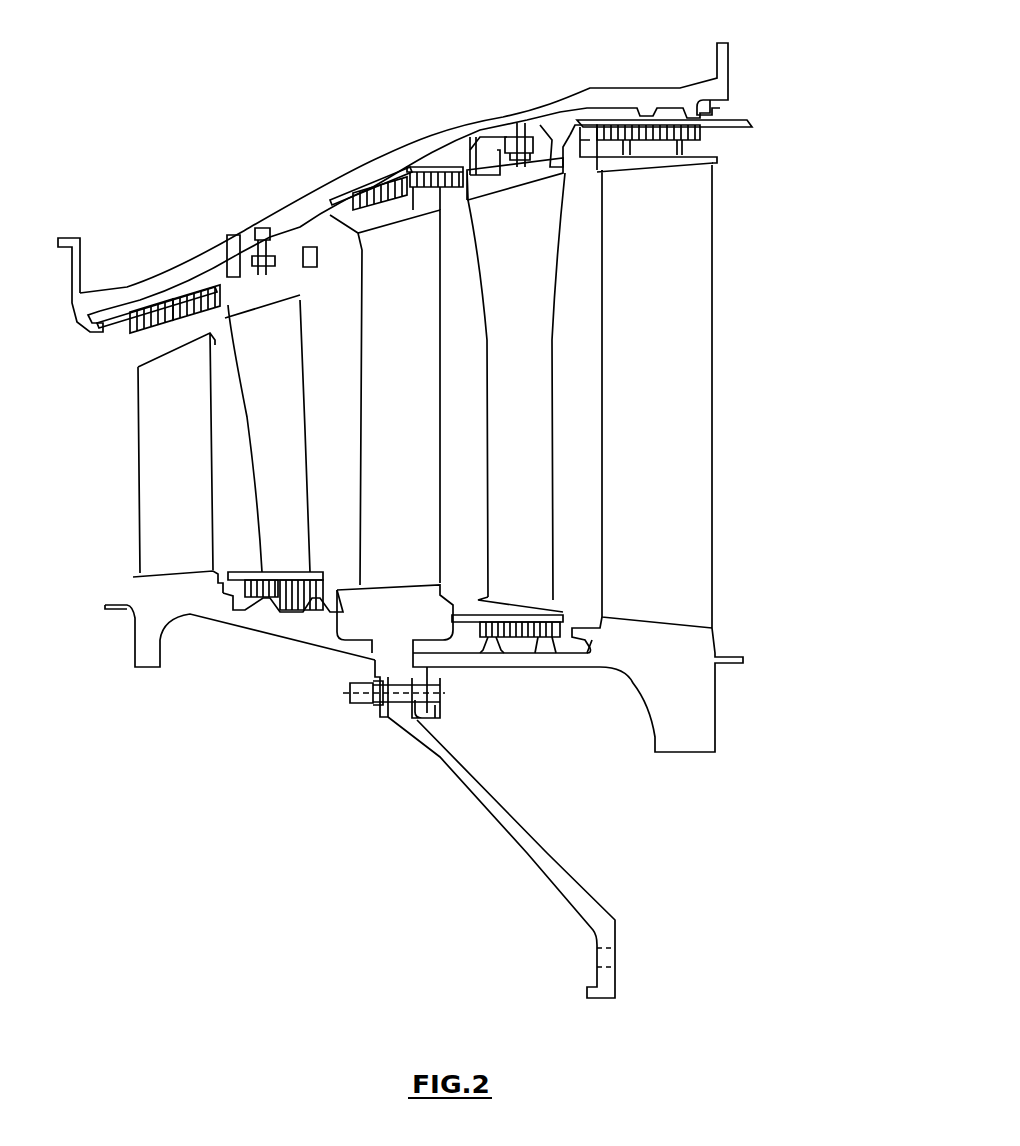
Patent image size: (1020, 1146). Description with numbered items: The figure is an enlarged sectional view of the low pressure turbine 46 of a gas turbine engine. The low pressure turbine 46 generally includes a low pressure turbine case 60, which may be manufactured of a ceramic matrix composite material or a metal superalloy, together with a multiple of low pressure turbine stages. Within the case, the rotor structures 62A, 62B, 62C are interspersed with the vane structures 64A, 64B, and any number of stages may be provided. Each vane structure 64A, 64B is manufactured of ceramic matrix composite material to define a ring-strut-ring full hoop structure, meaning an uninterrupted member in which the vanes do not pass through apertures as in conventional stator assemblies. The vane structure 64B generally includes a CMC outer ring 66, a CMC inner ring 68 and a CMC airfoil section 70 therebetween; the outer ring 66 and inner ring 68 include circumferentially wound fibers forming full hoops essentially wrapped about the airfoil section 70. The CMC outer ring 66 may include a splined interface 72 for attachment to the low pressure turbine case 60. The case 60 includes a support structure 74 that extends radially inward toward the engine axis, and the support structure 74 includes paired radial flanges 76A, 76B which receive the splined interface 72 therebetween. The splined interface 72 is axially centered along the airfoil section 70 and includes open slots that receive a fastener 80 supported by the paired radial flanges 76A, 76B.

The low pressure turbine 46 is at (805, 85).
The low pressure turbine case 60 is at (458, 123).
The rotor structure 62A is at (200, 475).
The rotor structure 62B is at (424, 443).
The rotor structure 62C is at (682, 427).
The vane structure 64A is at (292, 380).
The vane structure 64B is at (551, 308).
The CMC outer ring 66 is at (482, 187).
The CMC inner ring 68 is at (528, 613).
The CMC airfoil section 70 is at (530, 372).
The splined interface 72 is at (551, 120).
The support structure 74 is at (525, 118).
The radial flange 76A is at (495, 127).
The radial flange 76B is at (590, 167).
The fastener 80 is at (495, 140).